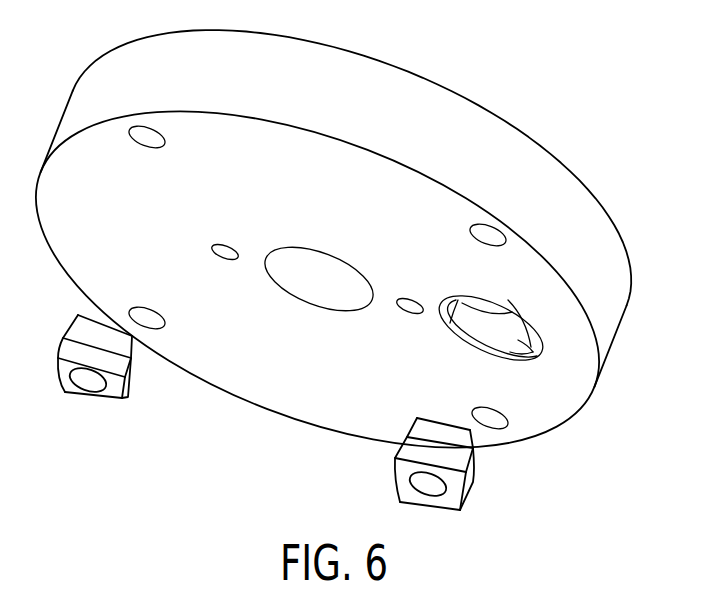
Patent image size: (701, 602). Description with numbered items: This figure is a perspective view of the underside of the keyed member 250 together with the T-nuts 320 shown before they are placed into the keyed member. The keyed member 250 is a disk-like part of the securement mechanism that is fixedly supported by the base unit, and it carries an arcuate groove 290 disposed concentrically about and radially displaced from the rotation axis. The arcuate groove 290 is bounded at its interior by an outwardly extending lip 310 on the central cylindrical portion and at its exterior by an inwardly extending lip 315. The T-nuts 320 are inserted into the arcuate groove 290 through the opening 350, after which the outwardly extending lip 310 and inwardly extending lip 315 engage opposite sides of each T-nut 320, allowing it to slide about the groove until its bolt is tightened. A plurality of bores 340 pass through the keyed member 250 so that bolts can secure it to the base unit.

The keyed member 250 is at (575, 105).
The bores 340 is at (147, 139).
The T-nuts 320 is at (110, 394).
The outwardly extending lip 310 is at (462, 301).
The arcuate groove 290 is at (502, 333).
The inwardly extending lip 315 is at (527, 350).
The opening 350 is at (452, 334).